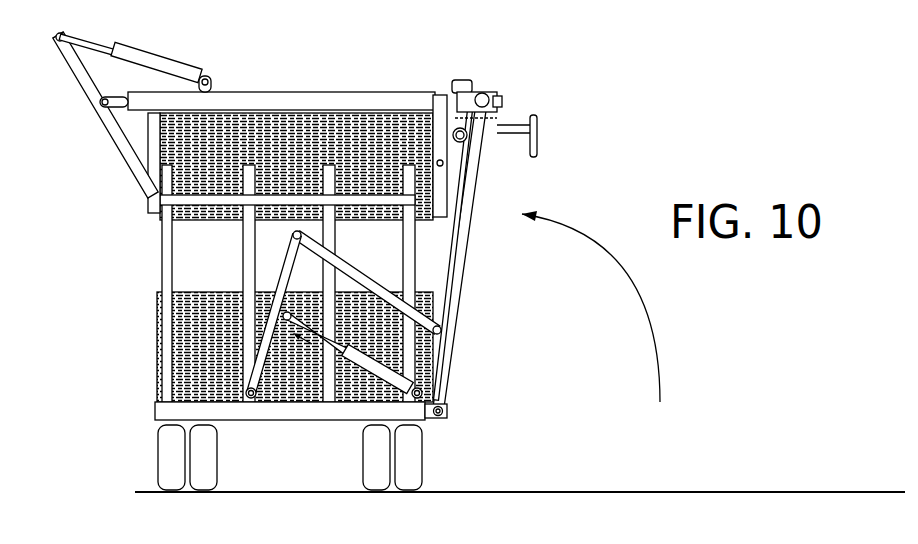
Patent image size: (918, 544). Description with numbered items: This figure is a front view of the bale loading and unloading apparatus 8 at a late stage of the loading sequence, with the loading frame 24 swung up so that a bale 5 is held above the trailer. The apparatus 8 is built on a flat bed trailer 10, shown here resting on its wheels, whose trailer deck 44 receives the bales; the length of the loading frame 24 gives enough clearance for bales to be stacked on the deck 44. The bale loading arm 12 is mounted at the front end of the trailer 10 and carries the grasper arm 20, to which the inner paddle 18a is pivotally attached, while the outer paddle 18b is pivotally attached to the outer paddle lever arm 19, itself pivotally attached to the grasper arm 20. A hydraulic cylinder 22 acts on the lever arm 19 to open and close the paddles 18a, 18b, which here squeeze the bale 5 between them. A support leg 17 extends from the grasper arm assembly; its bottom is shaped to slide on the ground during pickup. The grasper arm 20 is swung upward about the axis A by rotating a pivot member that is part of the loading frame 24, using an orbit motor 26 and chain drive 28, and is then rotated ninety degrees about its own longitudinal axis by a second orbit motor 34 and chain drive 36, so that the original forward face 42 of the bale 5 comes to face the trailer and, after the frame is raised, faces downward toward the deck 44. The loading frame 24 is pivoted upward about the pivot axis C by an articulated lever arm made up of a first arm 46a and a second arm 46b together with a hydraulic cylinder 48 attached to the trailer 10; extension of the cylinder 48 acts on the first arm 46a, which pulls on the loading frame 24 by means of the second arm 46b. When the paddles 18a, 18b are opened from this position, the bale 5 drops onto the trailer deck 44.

The apparatus 8 is at (616, 128).
The bale 5 is at (283, 133).
The flat bed trailer 10 is at (158, 412).
The bale loading arm 12 is at (462, 300).
The support leg 17 is at (533, 137).
The inner paddle 18a is at (437, 197).
The outer paddle 18b is at (152, 198).
The outer paddle lever arm 19 is at (86, 80).
The grasper arm 20 is at (343, 100).
The hydraulic cylinder 22 is at (163, 66).
The loading frame 24 is at (455, 330).
The orbit motor 26 is at (460, 142).
The chain drive 28 is at (457, 100).
The orbit motor 34 is at (452, 95).
The chain drive 36 is at (497, 120).
The original forward face 42 is at (233, 222).
The trailer deck 44 is at (200, 385).
The first arm 46a is at (283, 282).
The second arm 46b is at (368, 283).
The hydraulic cylinder 48 is at (367, 378).
The axis A is at (490, 97).
The pivot axis C is at (443, 418).